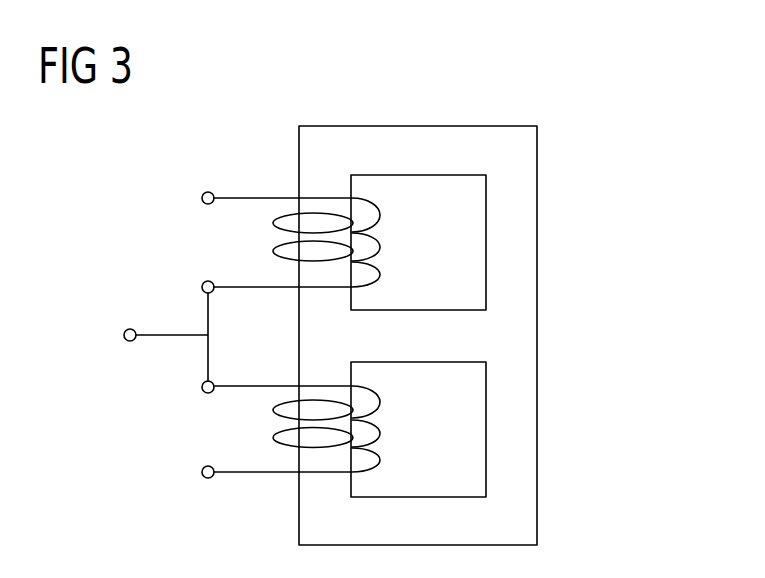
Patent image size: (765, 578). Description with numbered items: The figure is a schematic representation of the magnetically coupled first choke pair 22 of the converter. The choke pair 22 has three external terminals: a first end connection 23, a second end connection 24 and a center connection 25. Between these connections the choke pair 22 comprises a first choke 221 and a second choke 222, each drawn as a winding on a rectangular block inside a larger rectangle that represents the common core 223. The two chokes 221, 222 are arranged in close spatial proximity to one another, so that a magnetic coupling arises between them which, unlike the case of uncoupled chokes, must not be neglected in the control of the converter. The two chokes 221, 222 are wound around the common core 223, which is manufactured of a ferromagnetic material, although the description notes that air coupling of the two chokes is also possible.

The first choke pair 22 is at (453, 329).
The first choke 221 is at (377, 431).
The second choke 222 is at (377, 245).
The common core 223 is at (537, 332).
The first end connection 23 is at (202, 472).
The second end connection 24 is at (202, 198).
The center connection 25 is at (124, 337).